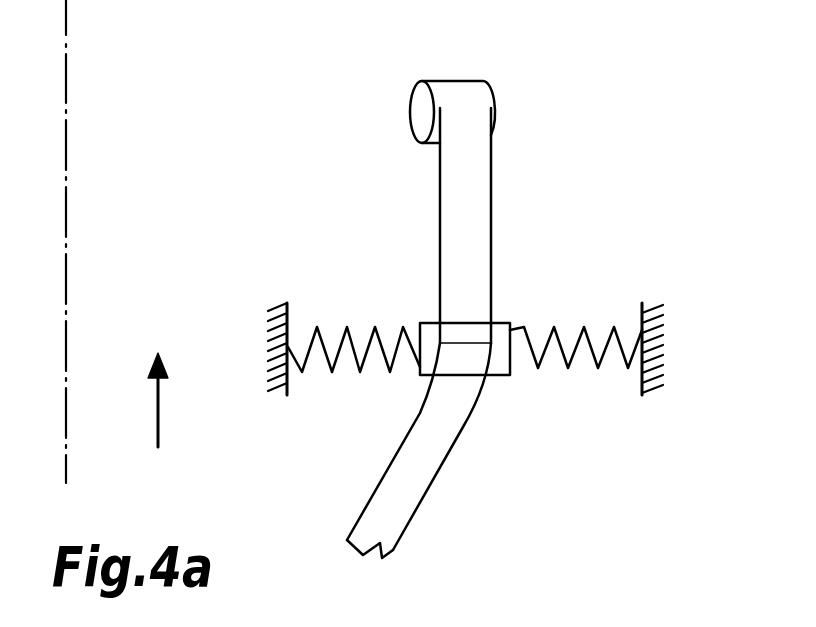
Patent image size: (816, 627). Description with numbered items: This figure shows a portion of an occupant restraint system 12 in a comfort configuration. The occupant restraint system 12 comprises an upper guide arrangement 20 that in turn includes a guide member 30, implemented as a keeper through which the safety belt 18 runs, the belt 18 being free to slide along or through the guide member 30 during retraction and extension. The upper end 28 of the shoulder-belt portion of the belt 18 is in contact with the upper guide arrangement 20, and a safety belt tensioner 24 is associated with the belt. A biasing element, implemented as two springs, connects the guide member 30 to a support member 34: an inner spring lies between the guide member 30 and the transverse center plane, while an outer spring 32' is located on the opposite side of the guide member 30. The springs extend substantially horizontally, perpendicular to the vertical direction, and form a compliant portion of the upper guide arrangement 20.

The occupant restraint system 12 is at (272, 203).
The safety belt tensioner 24 is at (419, 105).
The guide member 30 is at (503, 332).
The upper end of the shoulder-belt portion 28 is at (475, 415).
The safety belt 18 is at (408, 488).
The outer spring 32' is at (576, 388).
The upper guide arrangement 20 is at (535, 305).
The support member 34 is at (272, 335).